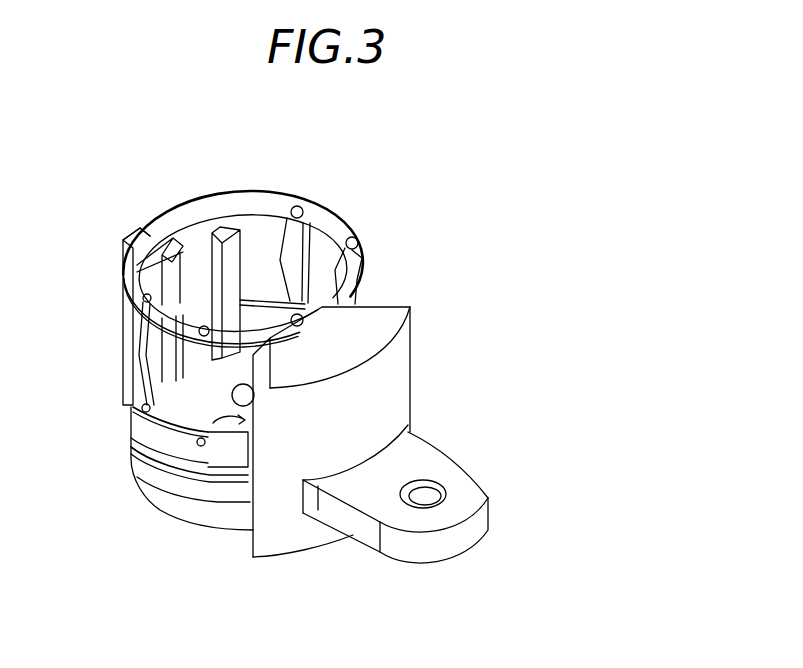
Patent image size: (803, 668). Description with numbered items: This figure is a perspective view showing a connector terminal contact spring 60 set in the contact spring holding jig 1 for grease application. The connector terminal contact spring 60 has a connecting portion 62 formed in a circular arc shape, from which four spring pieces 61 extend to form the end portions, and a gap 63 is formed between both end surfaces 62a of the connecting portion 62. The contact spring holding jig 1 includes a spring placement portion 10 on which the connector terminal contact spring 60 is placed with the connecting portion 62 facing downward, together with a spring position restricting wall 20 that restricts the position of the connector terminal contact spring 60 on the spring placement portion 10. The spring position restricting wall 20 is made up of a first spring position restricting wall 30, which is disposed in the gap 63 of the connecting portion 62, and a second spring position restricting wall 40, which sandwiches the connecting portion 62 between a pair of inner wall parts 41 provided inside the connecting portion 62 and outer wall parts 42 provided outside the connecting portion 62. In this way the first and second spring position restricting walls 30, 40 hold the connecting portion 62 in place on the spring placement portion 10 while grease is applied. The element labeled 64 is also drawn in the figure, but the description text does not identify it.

The contact spring holding jig for grease application 1 is at (407, 263).
The spring placement portion 10 is at (205, 432).
The spring position restricting wall 20 is at (590, 218).
The first spring position restricting wall 30 is at (428, 336).
The second spring position restricting wall 40 is at (143, 210).
The inner wall part 41 is at (231, 218).
The outer wall part 42 is at (129, 217).
The connector terminal contact spring 60 is at (295, 180).
The spring piece 61 is at (300, 256).
The connecting portion 62 is at (150, 446).
The end surface 62a is at (250, 448).
The gap 63 is at (238, 470).
The lower ring 64 is at (186, 393).